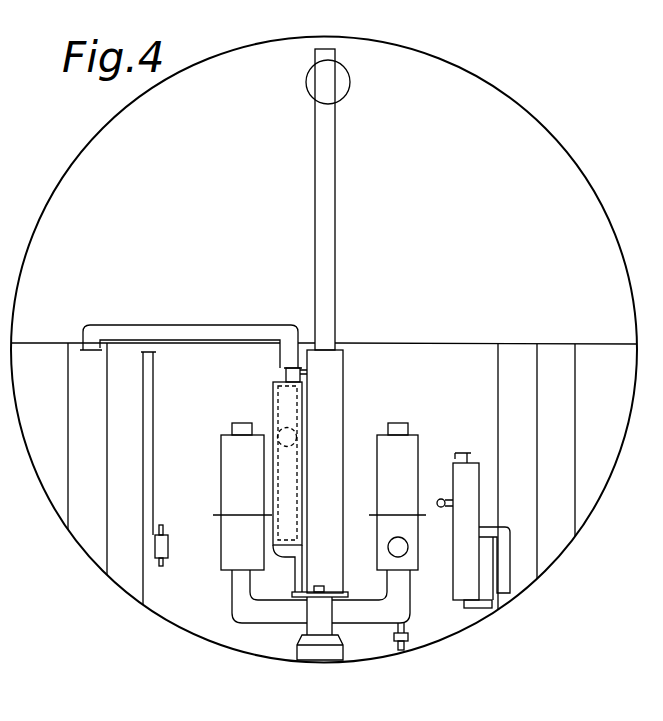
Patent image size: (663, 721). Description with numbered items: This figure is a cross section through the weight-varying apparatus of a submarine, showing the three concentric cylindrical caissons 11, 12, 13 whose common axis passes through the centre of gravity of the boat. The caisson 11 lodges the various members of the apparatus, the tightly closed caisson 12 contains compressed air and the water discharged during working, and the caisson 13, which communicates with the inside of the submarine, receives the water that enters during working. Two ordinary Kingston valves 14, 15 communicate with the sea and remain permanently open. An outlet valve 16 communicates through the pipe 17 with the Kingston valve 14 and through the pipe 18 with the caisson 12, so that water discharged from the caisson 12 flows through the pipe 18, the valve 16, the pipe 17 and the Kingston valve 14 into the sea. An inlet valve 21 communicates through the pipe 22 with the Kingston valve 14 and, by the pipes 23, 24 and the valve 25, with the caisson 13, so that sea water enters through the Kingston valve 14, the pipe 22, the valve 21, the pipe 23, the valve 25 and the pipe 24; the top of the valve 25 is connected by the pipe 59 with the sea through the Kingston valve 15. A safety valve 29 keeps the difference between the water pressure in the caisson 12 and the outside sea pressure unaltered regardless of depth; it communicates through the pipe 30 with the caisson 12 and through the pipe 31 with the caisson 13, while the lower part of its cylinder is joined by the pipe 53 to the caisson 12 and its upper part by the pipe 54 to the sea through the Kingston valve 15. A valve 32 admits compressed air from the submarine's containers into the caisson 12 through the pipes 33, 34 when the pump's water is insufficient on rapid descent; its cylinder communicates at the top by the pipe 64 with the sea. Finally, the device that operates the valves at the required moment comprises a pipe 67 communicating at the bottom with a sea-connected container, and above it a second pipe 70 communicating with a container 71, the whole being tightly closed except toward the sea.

The caisson 11 is at (482, 477).
The caisson 12 is at (520, 461).
The caisson 13 is at (559, 440).
The Kingston valve 14 is at (326, 655).
The Kingston valve 15 is at (403, 651).
The outlet valve 16 is at (416, 527).
The pipe 17 is at (368, 617).
The pipe 18 is at (399, 547).
The inlet valve 21 is at (230, 562).
The pipe 22 is at (263, 618).
The pipe 23 is at (290, 548).
The pipe 24 is at (202, 318).
The valve 25 is at (273, 400).
The safety valve 29 is at (468, 478).
The pipe 30 is at (493, 533).
The pipe 31 is at (449, 500).
The valve 32 is at (169, 551).
The pipe 33 is at (158, 570).
The pipe 34 is at (152, 462).
The pipe 53 is at (470, 608).
The pipe 54 is at (485, 455).
The pipe 59 is at (286, 374).
The pipe 64 is at (165, 528).
The pipe 67 is at (334, 407).
The pipe 70 is at (330, 212).
The container 71 is at (344, 80).